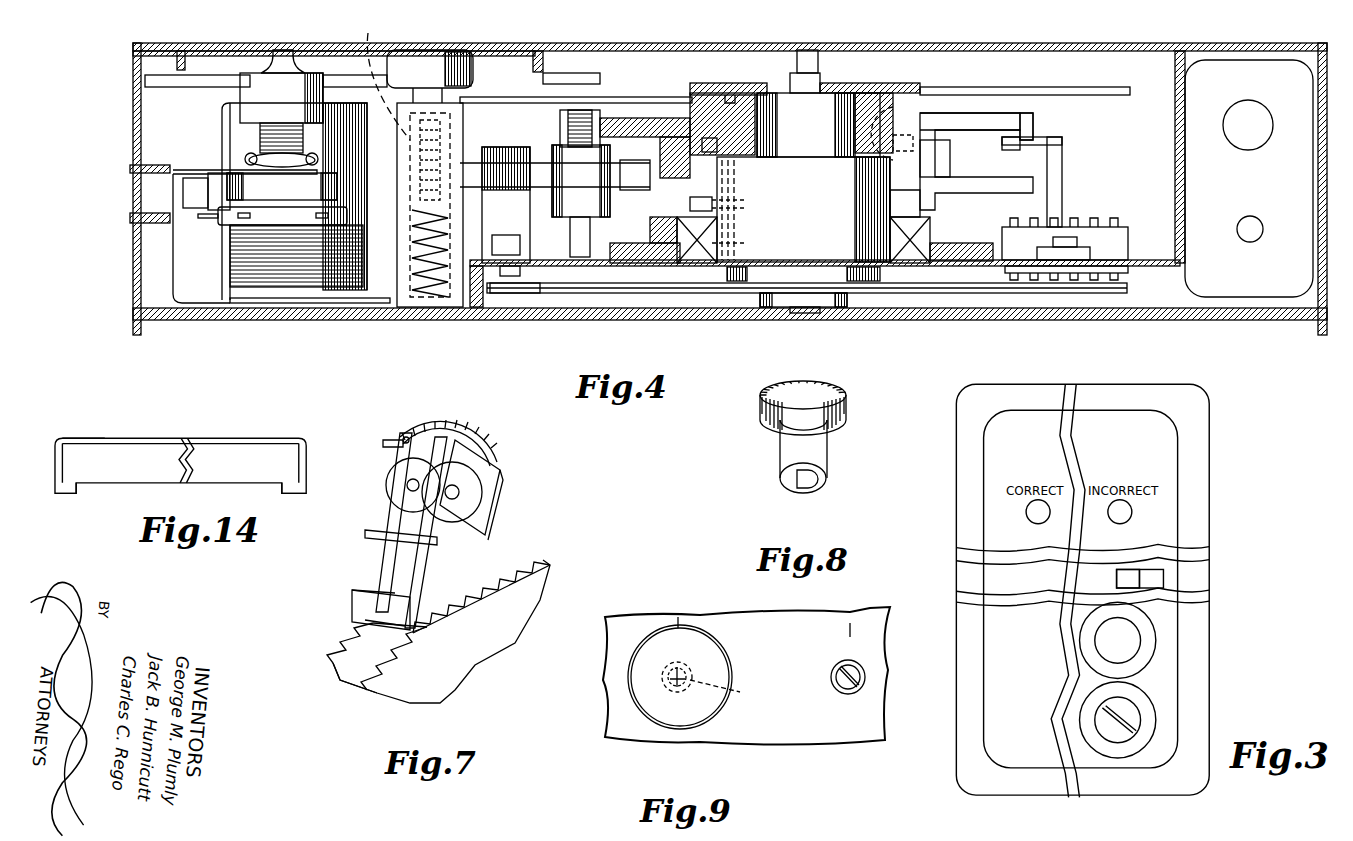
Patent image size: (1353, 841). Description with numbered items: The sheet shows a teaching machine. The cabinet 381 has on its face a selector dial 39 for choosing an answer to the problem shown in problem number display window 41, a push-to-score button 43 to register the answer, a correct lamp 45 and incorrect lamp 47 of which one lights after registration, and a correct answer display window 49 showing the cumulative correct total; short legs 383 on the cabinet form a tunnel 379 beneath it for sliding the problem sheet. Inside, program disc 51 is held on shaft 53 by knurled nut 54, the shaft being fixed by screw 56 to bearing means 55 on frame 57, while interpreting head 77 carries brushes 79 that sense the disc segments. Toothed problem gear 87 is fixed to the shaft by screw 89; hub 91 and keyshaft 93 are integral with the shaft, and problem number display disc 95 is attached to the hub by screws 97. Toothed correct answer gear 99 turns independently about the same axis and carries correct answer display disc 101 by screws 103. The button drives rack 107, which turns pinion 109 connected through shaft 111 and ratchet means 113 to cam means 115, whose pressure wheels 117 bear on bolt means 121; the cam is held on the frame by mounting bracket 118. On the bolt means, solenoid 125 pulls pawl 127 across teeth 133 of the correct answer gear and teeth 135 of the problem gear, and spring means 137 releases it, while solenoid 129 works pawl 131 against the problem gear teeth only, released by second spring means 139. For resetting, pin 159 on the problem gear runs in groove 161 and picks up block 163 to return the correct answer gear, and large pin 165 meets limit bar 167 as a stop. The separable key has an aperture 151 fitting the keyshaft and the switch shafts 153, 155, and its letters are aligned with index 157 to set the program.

In FIG. 4, the selector dial 39 is at (283, 50).
In FIG. 3, the selector dial 39 is at (1098, 707).
In FIG. 4, the rack 107 is at (382, 77).
In FIG. 4, the push-to-score button 43 is at (430, 62).
In FIG. 3, the push-to-score button 43 is at (1120, 622).
In FIG. 4, the keyshaft 93 is at (808, 50).
In FIG. 4, the screws 103 is at (725, 88).
In FIG. 4, the screws 97 is at (770, 90).
In FIG. 4, the hub 91 is at (832, 97).
In FIG. 4, the problem number display disc 95 is at (975, 87).
In FIG. 4, the toothed correct answer gear 99 is at (1030, 118).
In FIG. 7, the toothed correct answer gear 99 is at (540, 597).
In FIG. 4, the block 163 is at (935, 110).
In FIG. 4, the large pin 165 is at (1020, 143).
In FIG. 4, the correct answer display disc 101 is at (1128, 95).
In FIG. 4, the rotatable wheel 117 is at (575, 115).
In FIG. 4, the groove 161 is at (706, 138).
In FIG. 4, the shaft 111 is at (483, 157).
In FIG. 4, the ratchet means 113 is at (555, 152).
In FIG. 4, the pin 159 is at (913, 147).
In FIG. 4, the bolt means 121 is at (950, 161).
In FIG. 4, the shaft 155 is at (190, 190).
In FIG. 9, the shaft 155 is at (831, 669).
In FIG. 4, the pinion 109 is at (420, 178).
In FIG. 4, the screw 89 is at (692, 208).
In FIG. 4, the limit bar 167 is at (1062, 161).
In FIG. 4, the toothed problem gear 87 is at (992, 186).
In FIG. 7, the toothed problem gear 87 is at (360, 684).
In FIG. 4, the interpreting head 77 is at (1125, 238).
In FIG. 4, the cam means 115 is at (580, 222).
In FIG. 4, the mounting bracket 118 is at (520, 256).
In FIG. 4, the program disc 51 is at (600, 289).
In FIG. 4, the frame 57 is at (680, 255).
In FIG. 4, the bearing means 55 is at (695, 260).
In FIG. 4, the screw 56 is at (700, 250).
In FIG. 4, the shaft 53 is at (790, 243).
In FIG. 4, the knurled nut 54 is at (848, 300).
In FIG. 4, the brushes 79 is at (1125, 274).
In FIG. 14, the cabinet 381 is at (65, 437).
In FIG. 14, the legs 383 is at (64, 486).
In FIG. 14, the tunnel 379 is at (276, 487).
In FIG. 7, the second spring means 139 is at (420, 437).
In FIG. 7, the spring means 137 is at (470, 438).
In FIG. 7, the solenoid 129 is at (387, 486).
In FIG. 7, the solenoid 125 is at (482, 498).
In FIG. 7, the pawl 131 is at (383, 558).
In FIG. 7, the pawl 127 is at (355, 596).
In FIG. 7, the teeth 135 is at (370, 624).
In FIG. 7, the teeth 133 is at (430, 638).
In FIG. 8, the aperture 151 is at (812, 482).
In FIG. 9, the index 157 is at (680, 624).
In FIG. 9, the shaft 153 is at (740, 692).
In FIG. 3, the correct lamp 45 is at (1025, 506).
In FIG. 3, the incorrect lamp 47 is at (1112, 505).
In FIG. 3, the problem number display window 41 is at (1102, 562).
In FIG. 3, the correct answer display window 49 is at (1147, 560).